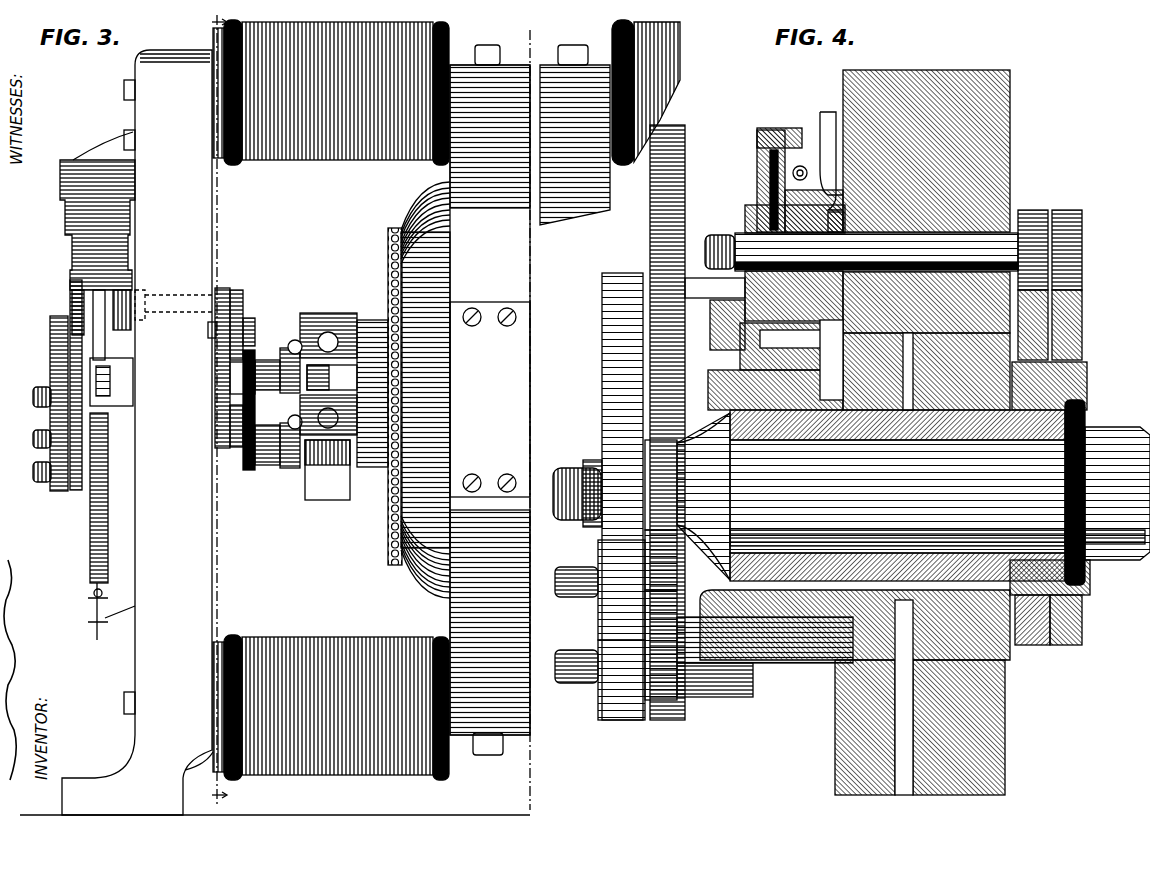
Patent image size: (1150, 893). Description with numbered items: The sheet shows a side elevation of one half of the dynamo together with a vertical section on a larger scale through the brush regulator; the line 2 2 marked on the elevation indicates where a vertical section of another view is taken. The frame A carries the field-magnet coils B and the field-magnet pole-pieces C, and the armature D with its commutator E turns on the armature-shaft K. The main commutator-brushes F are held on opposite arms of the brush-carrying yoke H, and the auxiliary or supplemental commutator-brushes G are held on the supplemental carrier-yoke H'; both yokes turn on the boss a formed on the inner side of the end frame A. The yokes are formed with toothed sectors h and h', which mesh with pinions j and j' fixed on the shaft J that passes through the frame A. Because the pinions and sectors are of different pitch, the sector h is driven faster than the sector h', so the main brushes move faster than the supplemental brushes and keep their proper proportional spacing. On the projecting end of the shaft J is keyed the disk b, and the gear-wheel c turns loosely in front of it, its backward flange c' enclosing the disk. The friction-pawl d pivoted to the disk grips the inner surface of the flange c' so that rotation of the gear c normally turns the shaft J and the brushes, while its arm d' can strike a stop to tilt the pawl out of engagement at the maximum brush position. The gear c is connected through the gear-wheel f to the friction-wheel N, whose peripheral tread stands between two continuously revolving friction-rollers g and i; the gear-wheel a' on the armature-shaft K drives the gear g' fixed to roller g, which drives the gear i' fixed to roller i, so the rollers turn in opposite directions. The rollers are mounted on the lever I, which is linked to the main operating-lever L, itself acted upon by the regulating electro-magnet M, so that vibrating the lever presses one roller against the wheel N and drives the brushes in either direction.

In FIG. 3, the frame A is at (275, 432).
In FIG. 4, the frame A is at (1012, 136).
In FIG. 3, the field-magnet coils B is at (446, 400).
In FIG. 3, the field-magnet pole-pieces C is at (530, 420).
In FIG. 3, the armature D is at (419, 390).
In FIG. 3, the commutator E is at (322, 315).
In FIG. 3, the main commutator-brushes F is at (327, 470).
In FIG. 3, the auxiliary or supplemental commutator-brushes G is at (328, 400).
In FIG. 3, the brush-carrying yoke or lever H is at (242, 410).
In FIG. 4, the brush-carrying yoke or lever H is at (1066, 632).
In FIG. 3, the supplemental carrier-yoke H' is at (244, 371).
In FIG. 4, the supplemental carrier-yoke H' is at (1032, 632).
In FIG. 4, the lever I is at (765, 668).
In FIG. 3, the shaft J is at (196, 304).
In FIG. 4, the shaft J is at (861, 263).
In FIG. 4, the armature-shaft K is at (940, 492).
In FIG. 3, the main operating-lever L is at (111, 382).
In FIG. 4, the main operating-lever L is at (712, 338).
In FIG. 3, the regulating electro-magnet M is at (86, 225).
In FIG. 3, the friction-wheel N is at (50, 353).
In FIG. 4, the friction-wheel N is at (622, 496).
In FIG. 4, the boss a is at (1058, 478).
In FIG. 4, the gear-wheel a' is at (687, 496).
In FIG. 4, the disk b is at (840, 214).
In FIG. 3, the gear-wheel c is at (111, 313).
In FIG. 4, the gear-wheel c is at (795, 180).
In FIG. 4, the flange c' is at (831, 360).
In FIG. 4, the friction-pawl d is at (809, 166).
In FIG. 4, the arm d' is at (831, 150).
In FIG. 4, the gear-wheel f is at (682, 208).
In FIG. 3, the friction-roller g is at (82, 513).
In FIG. 4, the friction-roller g is at (600, 590).
In FIG. 4, the gear g' is at (674, 560).
In FIG. 3, the toothed sector h is at (254, 332).
In FIG. 4, the toothed sector h is at (1067, 325).
In FIG. 3, the toothed sector h' is at (203, 328).
In FIG. 4, the toothed sector h' is at (1033, 325).
In FIG. 3, the friction-roller i is at (40, 463).
In FIG. 4, the friction-roller i is at (600, 680).
In FIG. 4, the gear i' is at (668, 654).
In FIG. 3, the pinion j is at (239, 313).
In FIG. 4, the pinion j is at (1067, 238).
In FIG. 3, the pinion j' is at (222, 357).
In FIG. 4, the pinion j' is at (1033, 239).
In FIG. 3, the section line 2 2 is at (214, 411).